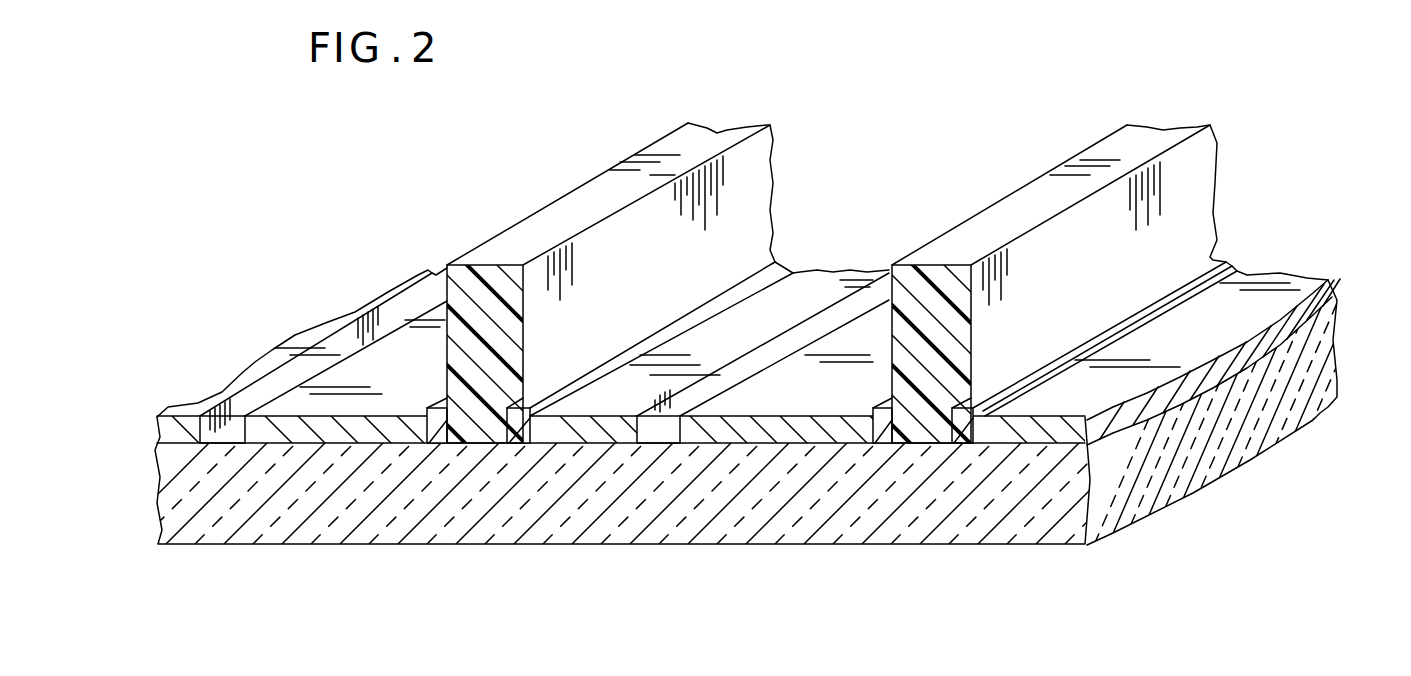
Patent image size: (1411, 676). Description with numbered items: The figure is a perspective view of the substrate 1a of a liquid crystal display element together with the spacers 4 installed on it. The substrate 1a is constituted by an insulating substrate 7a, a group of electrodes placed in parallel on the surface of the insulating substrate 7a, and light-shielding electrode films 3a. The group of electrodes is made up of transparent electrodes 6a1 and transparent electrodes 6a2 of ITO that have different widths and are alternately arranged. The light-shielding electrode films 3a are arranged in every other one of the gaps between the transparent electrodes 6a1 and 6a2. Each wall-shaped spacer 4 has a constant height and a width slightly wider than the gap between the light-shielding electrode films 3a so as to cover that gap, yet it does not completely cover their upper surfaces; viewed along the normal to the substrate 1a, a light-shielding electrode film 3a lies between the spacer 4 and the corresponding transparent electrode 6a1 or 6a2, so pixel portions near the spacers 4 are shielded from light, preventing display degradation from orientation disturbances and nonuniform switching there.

The spacer 4 is at (887, 295).
The transparent electrode 6a1 is at (709, 306).
The transparent electrode 6a2 is at (775, 308).
The substrate 1a is at (1345, 273).
The light-shielding electrode film 3a is at (897, 443).
The insulating substrate 7a is at (666, 517).